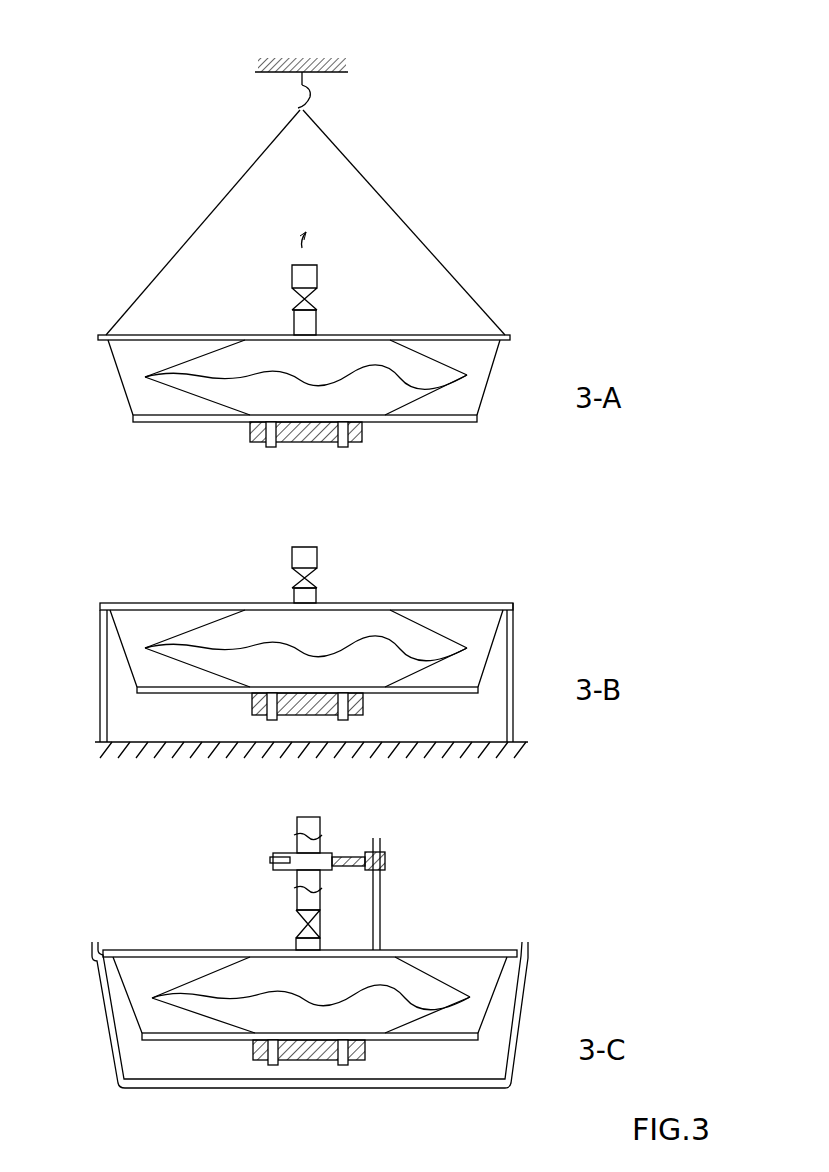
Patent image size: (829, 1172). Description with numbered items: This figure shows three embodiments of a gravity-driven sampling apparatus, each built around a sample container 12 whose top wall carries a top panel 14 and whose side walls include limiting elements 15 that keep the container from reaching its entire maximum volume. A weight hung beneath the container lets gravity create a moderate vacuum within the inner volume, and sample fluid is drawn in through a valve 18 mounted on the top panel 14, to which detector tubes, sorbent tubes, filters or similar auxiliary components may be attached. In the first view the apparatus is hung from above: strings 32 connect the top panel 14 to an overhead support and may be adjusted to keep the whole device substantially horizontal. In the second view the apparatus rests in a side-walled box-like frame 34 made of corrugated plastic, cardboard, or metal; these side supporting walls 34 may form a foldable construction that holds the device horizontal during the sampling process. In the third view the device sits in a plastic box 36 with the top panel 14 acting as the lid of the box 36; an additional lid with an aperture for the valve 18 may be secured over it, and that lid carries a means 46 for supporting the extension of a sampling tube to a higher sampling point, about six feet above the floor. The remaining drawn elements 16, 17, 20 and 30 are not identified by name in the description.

The sample container 12 is at (345, 362).
The top panel 14 is at (208, 330).
The limiting elements 15 is at (118, 376).
The bottom plate 16 is at (133, 422).
The fasteners / pins 17 is at (271, 447).
The valve 18 is at (315, 300).
The mounting block 20 is at (250, 432).
The support surface / ceiling / ground 30 is at (340, 58).
The strings 32 is at (460, 192).
The side walled box-like frame 34 is at (100, 672).
The plastic box 36 is at (524, 984).
The means for supporting the extension of a sampling tube 46 is at (385, 888).